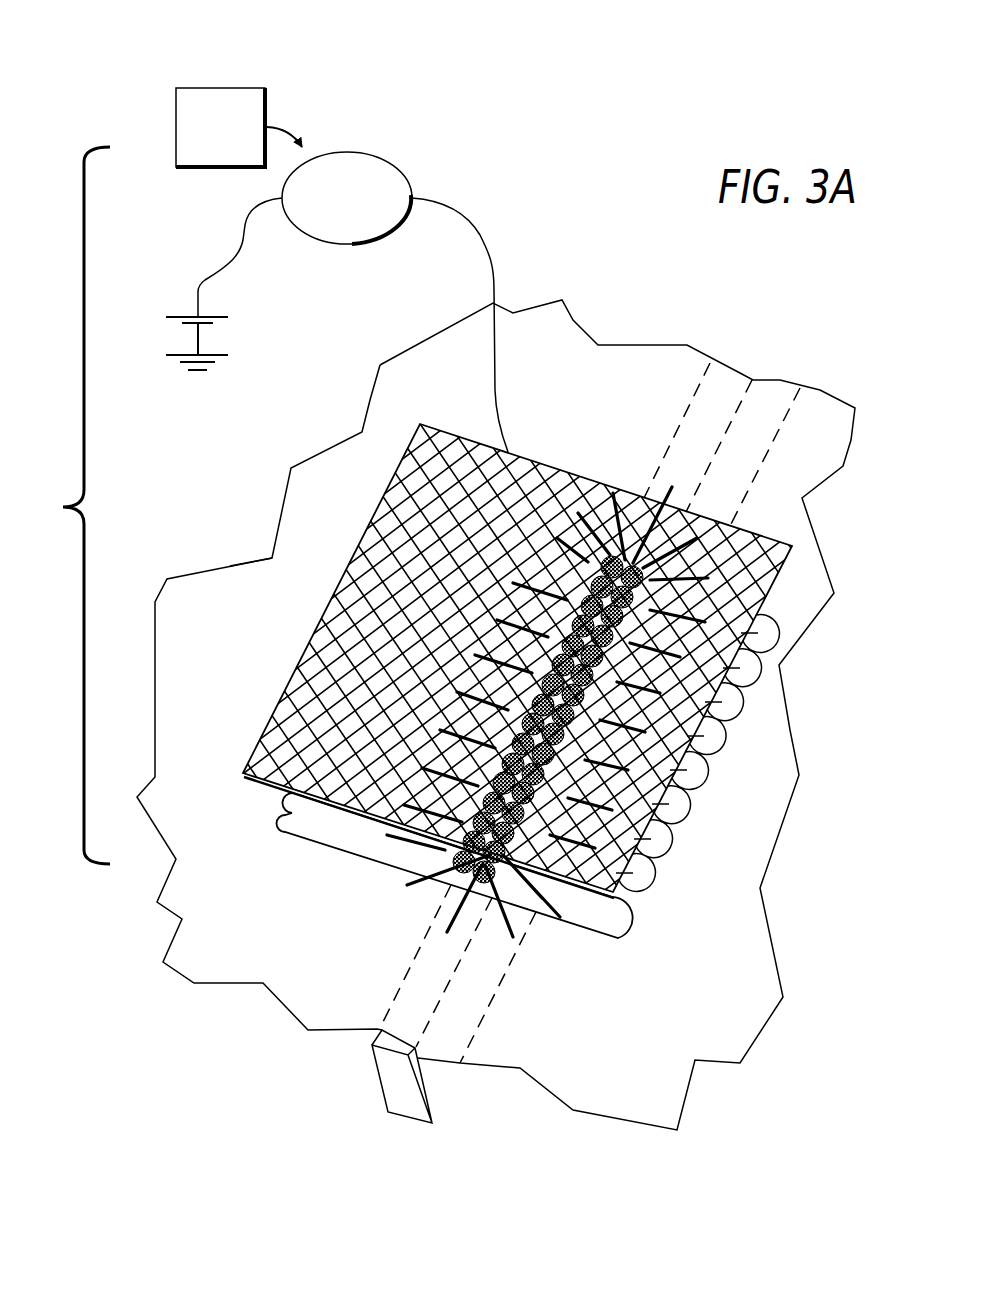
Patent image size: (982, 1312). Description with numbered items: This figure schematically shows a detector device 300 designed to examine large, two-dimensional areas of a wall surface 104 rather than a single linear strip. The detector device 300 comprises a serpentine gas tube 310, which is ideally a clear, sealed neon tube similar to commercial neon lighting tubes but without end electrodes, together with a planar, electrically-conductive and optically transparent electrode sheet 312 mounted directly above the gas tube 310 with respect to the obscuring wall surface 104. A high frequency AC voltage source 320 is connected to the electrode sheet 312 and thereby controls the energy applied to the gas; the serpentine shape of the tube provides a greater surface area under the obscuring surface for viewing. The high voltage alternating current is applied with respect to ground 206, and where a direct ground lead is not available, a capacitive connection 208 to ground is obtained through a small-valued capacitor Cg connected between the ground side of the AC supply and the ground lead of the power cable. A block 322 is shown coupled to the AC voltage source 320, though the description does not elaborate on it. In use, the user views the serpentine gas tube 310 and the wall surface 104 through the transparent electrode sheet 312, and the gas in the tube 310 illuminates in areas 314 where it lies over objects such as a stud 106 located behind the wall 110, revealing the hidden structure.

The detector device 300 is at (64, 505).
The controller 322 is at (232, 88).
The high frequency AC voltage source 320 is at (362, 152).
The capacitive connection 208 is at (213, 317).
The ground 206 is at (180, 355).
The wall surface 104 is at (571, 316).
The wall 110 is at (254, 557).
The electrode sheet 312 is at (380, 480).
The serpentine gas tube 310 is at (583, 908).
The illuminated areas 314 is at (398, 903).
The stud 106 is at (387, 1065).